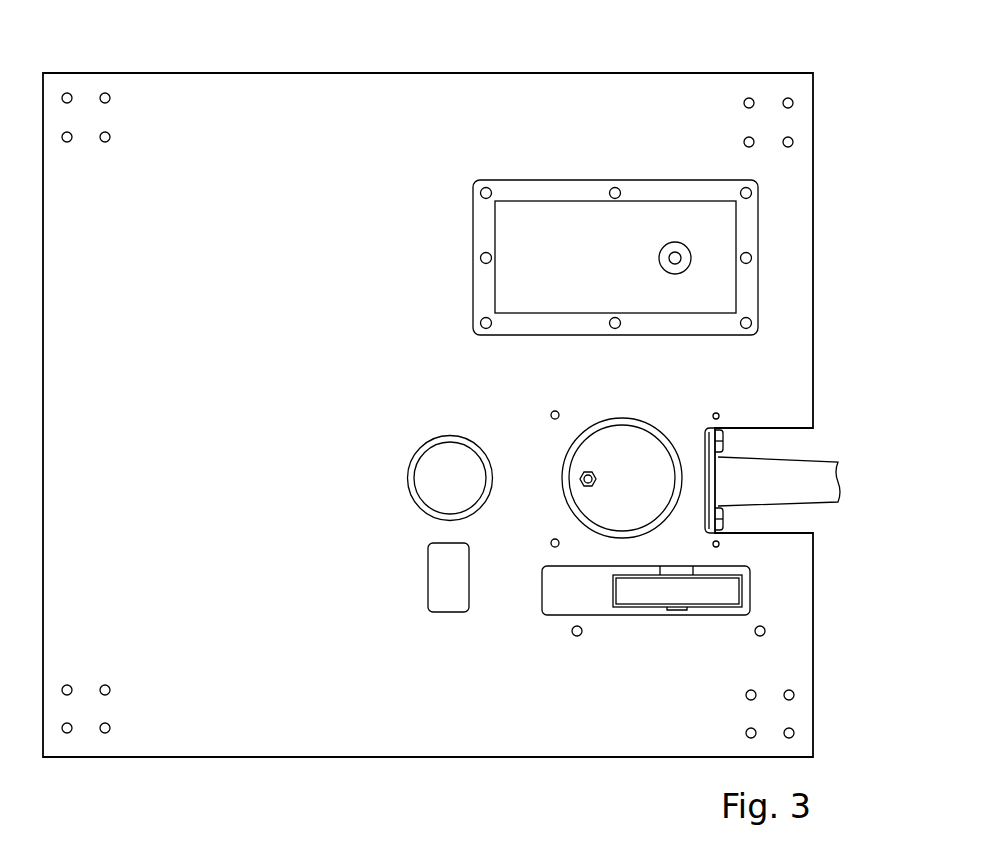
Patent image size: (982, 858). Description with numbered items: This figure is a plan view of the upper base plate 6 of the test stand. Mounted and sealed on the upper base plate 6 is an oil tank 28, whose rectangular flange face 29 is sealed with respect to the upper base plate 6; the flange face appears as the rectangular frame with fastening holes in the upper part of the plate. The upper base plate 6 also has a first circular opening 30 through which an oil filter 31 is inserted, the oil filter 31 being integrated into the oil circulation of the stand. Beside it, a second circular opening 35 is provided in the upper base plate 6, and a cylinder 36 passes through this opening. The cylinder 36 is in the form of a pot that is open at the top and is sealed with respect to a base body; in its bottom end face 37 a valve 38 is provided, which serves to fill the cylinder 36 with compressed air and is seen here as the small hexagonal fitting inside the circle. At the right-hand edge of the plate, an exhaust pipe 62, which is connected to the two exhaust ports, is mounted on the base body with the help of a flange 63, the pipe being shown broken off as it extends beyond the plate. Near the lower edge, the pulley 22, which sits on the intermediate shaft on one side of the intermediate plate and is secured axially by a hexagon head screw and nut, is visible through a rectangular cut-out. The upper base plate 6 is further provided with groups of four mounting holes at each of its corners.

The upper base plate 6 is at (249, 104).
The pulley 22 is at (709, 596).
The oil tank 28 is at (522, 220).
The rectangular flange face 29 is at (646, 190).
The first circular opening 30 is at (443, 440).
The oil filter 31 is at (452, 474).
The second circular opening 35 is at (605, 446).
The cylinder 36 is at (622, 447).
The bottom end face 37 is at (595, 500).
The valve 38 is at (599, 479).
The exhaust pipe 62 is at (805, 480).
The flange 63 is at (724, 441).